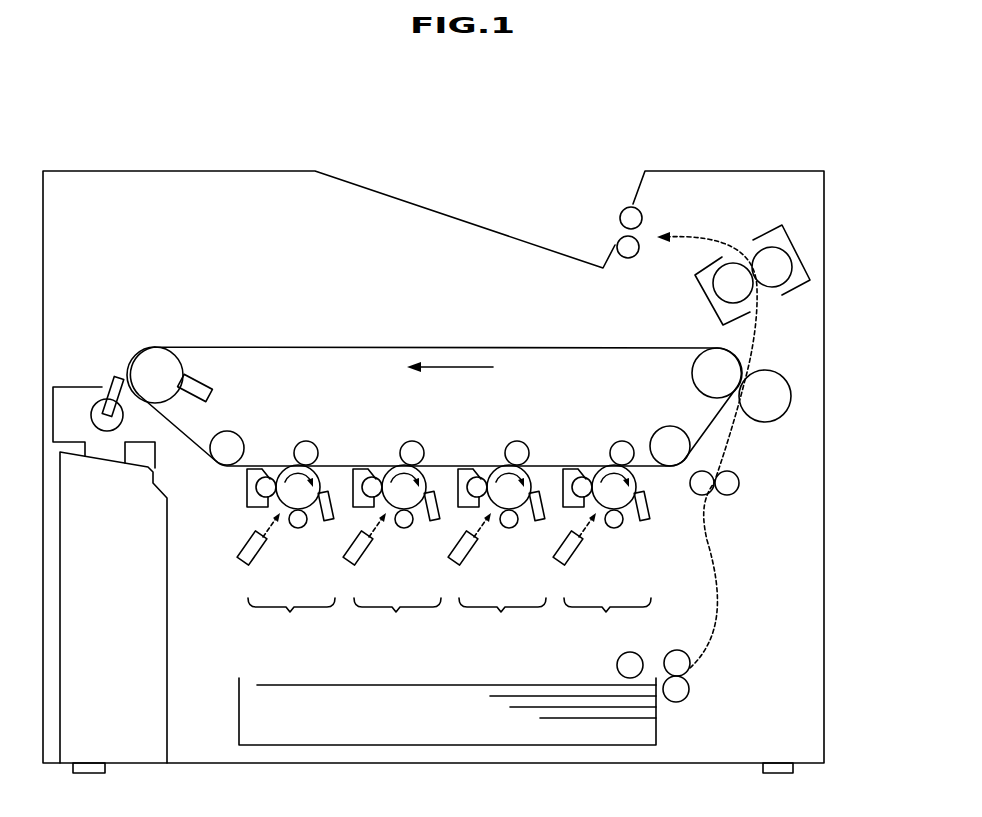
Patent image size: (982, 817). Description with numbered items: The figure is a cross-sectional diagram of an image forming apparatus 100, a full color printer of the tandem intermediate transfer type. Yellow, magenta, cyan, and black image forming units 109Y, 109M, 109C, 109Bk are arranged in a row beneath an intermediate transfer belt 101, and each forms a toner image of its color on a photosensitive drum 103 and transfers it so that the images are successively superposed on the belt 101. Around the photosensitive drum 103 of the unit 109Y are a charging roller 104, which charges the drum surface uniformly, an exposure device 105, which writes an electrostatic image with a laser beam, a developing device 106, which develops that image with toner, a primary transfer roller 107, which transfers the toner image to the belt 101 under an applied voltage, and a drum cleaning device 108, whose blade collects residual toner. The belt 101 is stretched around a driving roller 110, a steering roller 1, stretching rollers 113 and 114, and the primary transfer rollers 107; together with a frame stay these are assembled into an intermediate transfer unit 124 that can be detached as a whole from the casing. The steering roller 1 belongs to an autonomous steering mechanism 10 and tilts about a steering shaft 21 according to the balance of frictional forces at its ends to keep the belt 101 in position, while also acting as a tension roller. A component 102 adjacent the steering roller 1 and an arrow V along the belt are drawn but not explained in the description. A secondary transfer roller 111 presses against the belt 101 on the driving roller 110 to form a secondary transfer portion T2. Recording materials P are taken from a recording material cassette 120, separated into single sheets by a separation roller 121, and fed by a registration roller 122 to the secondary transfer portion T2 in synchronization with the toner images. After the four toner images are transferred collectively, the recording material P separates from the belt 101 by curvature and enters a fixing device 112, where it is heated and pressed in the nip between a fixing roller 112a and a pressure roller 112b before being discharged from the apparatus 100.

The steering roller 1 is at (137, 350).
The autonomous steering mechanism 10 is at (206, 362).
The steering shaft 21 is at (213, 375).
The image forming apparatus 100 is at (531, 146).
The intermediate transfer belt 101 is at (512, 347).
The tension applying roller 102 is at (113, 378).
The photosensitive drum 103 is at (318, 474).
The charging roller 104 is at (298, 530).
The exposure device 105 is at (243, 545).
The developing device 106 is at (247, 490).
The primary transfer roller 107 is at (306, 441).
The drum cleaning device 108 is at (328, 522).
The yellow image forming unit 109Y is at (272, 517).
The magenta image forming unit 109M is at (392, 543).
The cyan image forming unit 109C is at (497, 543).
The black image forming unit 109Bk is at (602, 543).
The driving roller 110 is at (692, 373).
The secondary transfer roller 111 is at (778, 421).
The fixing device 112 is at (760, 291).
The fixing roller 112a is at (711, 302).
The pressure roller 112b is at (793, 247).
The stretching roller 113 is at (237, 430).
The stretching roller 114 is at (651, 436).
The recording material cassette 120 is at (239, 700).
The separation roller 121 is at (690, 689).
The registration roller 122 is at (725, 495).
The intermediate transfer unit 124 is at (326, 331).
The secondary transfer portion T2 is at (732, 381).
The recording material P is at (707, 440).
The belt moving direction V is at (450, 379).